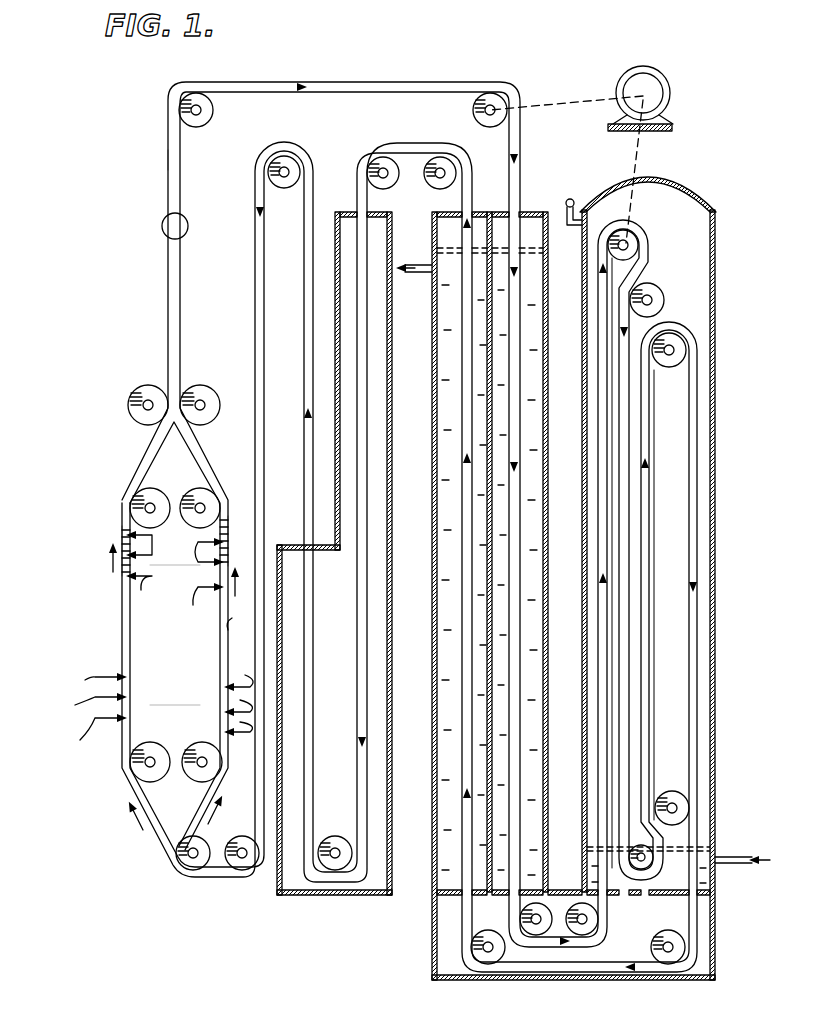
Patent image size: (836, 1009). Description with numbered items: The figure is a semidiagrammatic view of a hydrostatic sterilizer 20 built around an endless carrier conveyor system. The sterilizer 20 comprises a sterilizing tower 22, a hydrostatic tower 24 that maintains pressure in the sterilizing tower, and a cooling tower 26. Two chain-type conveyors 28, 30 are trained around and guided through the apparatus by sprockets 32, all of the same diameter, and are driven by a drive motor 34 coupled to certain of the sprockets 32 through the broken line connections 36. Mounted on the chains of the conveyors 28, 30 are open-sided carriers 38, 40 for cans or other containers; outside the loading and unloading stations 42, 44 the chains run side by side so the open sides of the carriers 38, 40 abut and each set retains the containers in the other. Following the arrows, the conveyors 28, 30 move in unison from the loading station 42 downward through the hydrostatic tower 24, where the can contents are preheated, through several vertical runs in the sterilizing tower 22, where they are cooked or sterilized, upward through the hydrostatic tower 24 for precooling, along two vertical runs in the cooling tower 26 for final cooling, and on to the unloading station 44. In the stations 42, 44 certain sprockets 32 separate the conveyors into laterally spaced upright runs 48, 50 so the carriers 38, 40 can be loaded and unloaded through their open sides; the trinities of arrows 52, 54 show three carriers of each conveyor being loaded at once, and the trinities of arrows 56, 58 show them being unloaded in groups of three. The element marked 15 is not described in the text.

The strip section 15 is at (162, 226).
The hydrostatic sterilizer 20 is at (562, 58).
The sterilizing tower 22 is at (716, 303).
The hydrostatic tower 24 is at (536, 212).
The cooling tower 26 is at (290, 896).
The chain-type conveyor 28 is at (168, 160).
The chain-type conveyor 30 is at (182, 172).
The sprockets 32 is at (206, 100).
The drive motor 34 is at (664, 89).
The broken line connections 36 is at (596, 104).
The open-sided carriers 38 is at (122, 540).
The open-sided carriers 40 is at (228, 531).
The loading station 42 is at (186, 574).
The unloading station 44 is at (188, 716).
The upright run 48 is at (122, 636).
The upright run 50 is at (240, 615).
The trinity of arrows 52 is at (152, 545).
The trinity of arrows 54 is at (215, 553).
The trinity of arrows 56 is at (87, 712).
The trinity of arrows 58 is at (215, 728).